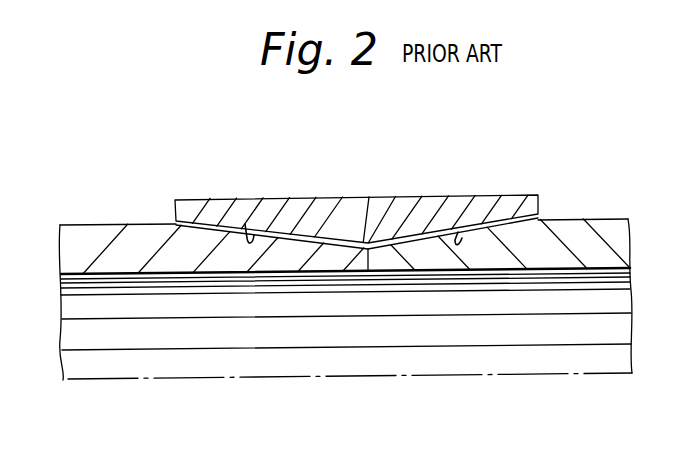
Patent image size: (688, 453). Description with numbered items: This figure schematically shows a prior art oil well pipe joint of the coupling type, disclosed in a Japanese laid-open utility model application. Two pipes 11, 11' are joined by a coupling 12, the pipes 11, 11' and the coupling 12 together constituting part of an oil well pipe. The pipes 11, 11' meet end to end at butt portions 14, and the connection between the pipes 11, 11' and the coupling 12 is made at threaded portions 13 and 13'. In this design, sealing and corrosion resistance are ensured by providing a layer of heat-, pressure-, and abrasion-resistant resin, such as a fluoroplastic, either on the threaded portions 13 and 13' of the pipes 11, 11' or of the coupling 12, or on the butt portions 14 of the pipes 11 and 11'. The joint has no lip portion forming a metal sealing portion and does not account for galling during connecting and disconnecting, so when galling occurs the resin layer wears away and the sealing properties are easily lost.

The pipe 11 is at (211, 276).
The pipe 11' is at (511, 267).
The coupling 12 is at (362, 202).
The threaded portion 13 is at (242, 195).
The threaded portion 13' is at (484, 194).
The butt portion 14 is at (367, 252).